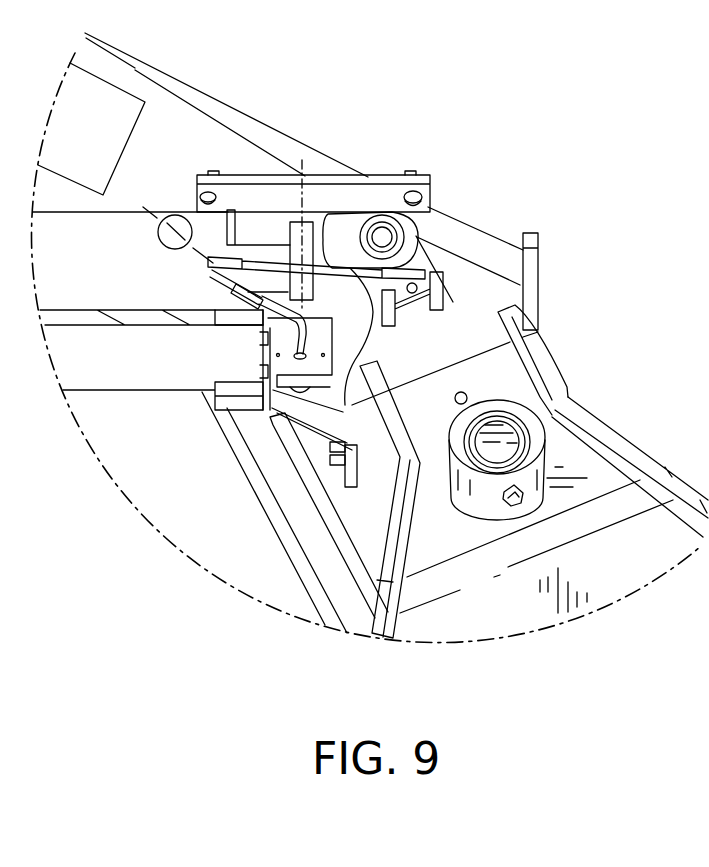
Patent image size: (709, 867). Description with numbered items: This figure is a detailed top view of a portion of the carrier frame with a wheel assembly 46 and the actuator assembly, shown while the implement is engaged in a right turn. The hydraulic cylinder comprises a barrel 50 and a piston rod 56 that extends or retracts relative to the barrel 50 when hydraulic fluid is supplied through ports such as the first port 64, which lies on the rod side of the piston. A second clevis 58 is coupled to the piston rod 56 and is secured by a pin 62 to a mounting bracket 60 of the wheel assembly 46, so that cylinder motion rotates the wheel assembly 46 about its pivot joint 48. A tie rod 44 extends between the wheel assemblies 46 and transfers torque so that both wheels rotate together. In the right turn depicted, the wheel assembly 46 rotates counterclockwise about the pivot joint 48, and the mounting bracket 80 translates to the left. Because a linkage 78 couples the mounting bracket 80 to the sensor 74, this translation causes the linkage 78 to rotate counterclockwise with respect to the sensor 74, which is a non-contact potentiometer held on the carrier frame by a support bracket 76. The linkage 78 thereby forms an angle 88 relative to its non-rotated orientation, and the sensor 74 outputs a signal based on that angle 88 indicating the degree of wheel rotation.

The tie rod 44 is at (98, 373).
The wheel assembly 46 is at (582, 462).
The pivot joint 48 is at (495, 442).
The barrel 50 is at (127, 227).
The piston rod 56 is at (262, 290).
The second clevis 58 is at (343, 238).
The mounting bracket 60 is at (457, 308).
The pin 62 is at (383, 237).
The first port 64 is at (163, 235).
The sensor 74 is at (278, 362).
The support bracket 76 is at (320, 413).
The linkage 78 is at (310, 267).
The mounting bracket 80 is at (386, 322).
The angle 88 is at (263, 277).